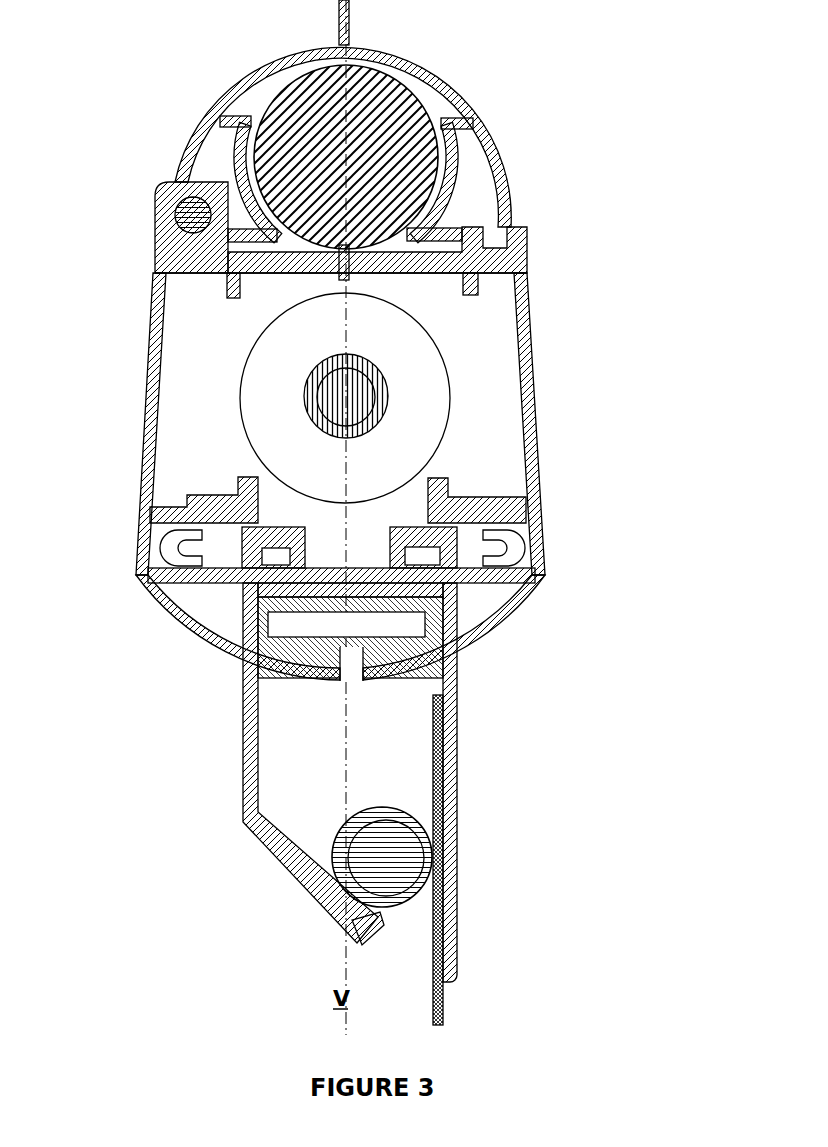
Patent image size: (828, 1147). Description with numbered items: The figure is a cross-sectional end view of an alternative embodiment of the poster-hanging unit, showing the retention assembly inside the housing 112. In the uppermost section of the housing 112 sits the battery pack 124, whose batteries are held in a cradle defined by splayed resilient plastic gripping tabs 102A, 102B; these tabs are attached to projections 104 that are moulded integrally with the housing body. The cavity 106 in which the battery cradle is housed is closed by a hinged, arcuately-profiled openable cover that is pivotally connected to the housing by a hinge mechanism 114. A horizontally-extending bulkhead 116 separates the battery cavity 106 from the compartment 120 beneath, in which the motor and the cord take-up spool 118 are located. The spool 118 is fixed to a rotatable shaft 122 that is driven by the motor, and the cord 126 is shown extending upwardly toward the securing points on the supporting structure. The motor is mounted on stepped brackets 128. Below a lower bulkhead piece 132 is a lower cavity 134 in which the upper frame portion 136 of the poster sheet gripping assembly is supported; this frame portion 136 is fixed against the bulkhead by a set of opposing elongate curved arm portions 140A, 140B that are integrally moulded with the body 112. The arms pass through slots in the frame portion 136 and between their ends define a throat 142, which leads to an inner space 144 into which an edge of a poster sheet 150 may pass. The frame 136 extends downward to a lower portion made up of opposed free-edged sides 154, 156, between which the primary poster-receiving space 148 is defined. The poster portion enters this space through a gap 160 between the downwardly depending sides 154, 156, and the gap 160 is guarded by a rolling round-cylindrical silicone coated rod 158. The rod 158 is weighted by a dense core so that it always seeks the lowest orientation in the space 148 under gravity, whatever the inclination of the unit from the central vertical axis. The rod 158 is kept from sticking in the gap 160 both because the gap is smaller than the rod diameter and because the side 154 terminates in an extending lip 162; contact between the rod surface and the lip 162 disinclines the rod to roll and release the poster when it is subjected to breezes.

The resilient plastic gripping tab 102A is at (466, 140).
The resilient plastic gripping tab 102B is at (216, 162).
The projection 104 is at (459, 223).
The cavity 106 is at (185, 142).
The housing 112 is at (539, 405).
The hinge mechanism 114 is at (157, 205).
The horizontally-extending bulkhead 116 is at (412, 273).
The cord take-up spool 118 is at (439, 375).
The compartment 120 is at (221, 459).
The rotatable shaft 122 is at (387, 420).
The battery pack 124 is at (425, 100).
The cord 126 is at (337, 12).
The stepped bracket 128 is at (479, 508).
The lower bulkhead piece 132 is at (544, 570).
The lower cavity 134 is at (219, 603).
The upper frame portion 136 is at (459, 600).
The elongate curved arm portion 140A is at (200, 648).
The elongate curved arm portion 140B is at (497, 647).
The throat 142 is at (359, 683).
The inner space 144 is at (455, 663).
The primary poster-receiving space 148 is at (402, 769).
The poster sheet 150 is at (423, 1010).
The free-edged side 154 is at (255, 843).
The free-edged side 156 is at (462, 973).
The silicone coated rod 158 is at (425, 817).
The gap 160 is at (424, 922).
The extending lip 162 is at (351, 935).